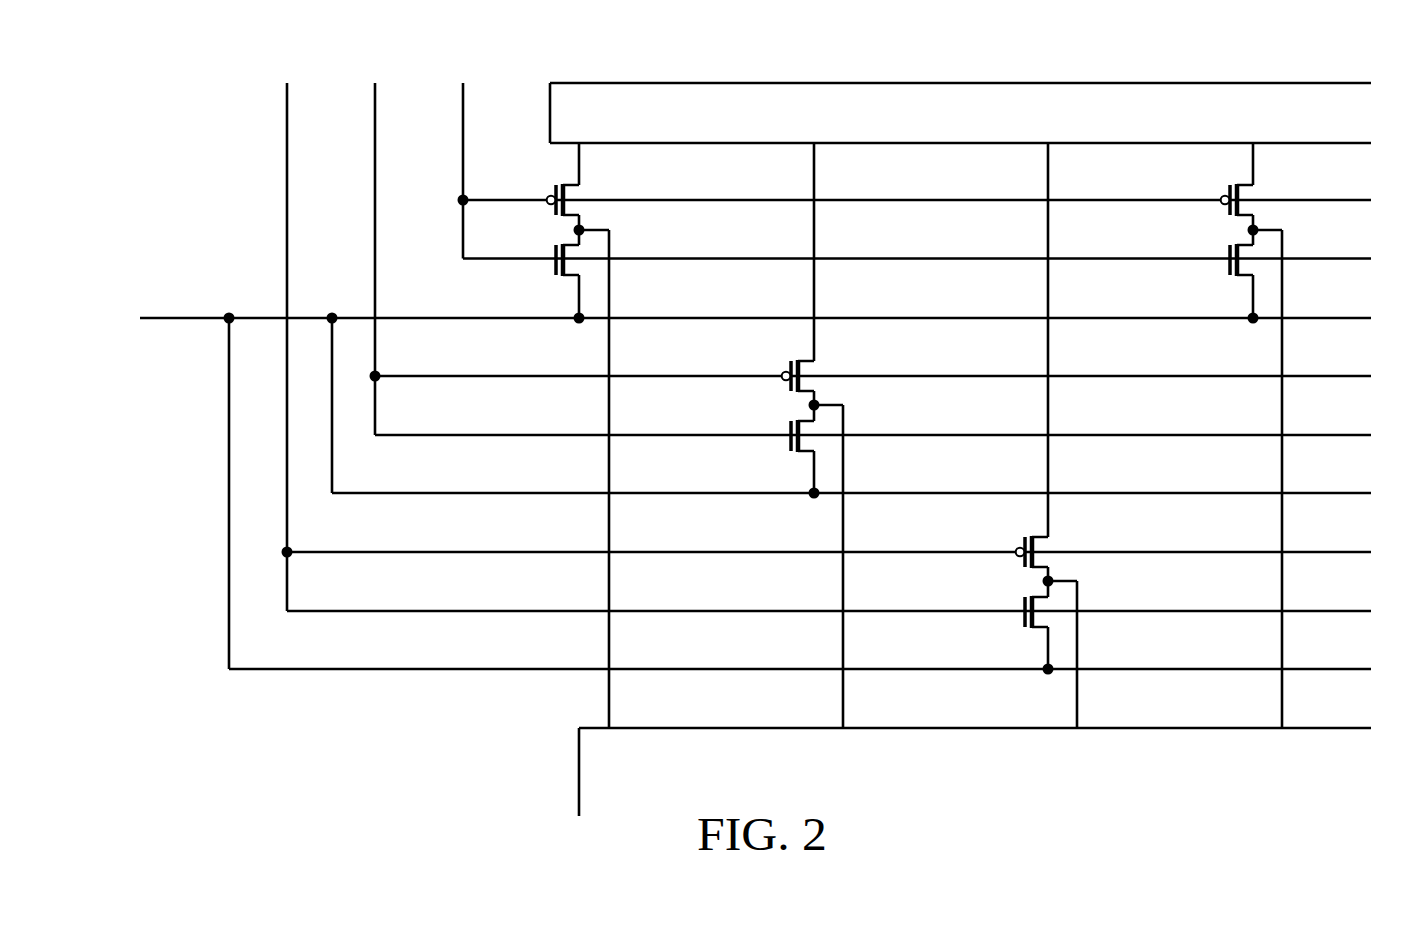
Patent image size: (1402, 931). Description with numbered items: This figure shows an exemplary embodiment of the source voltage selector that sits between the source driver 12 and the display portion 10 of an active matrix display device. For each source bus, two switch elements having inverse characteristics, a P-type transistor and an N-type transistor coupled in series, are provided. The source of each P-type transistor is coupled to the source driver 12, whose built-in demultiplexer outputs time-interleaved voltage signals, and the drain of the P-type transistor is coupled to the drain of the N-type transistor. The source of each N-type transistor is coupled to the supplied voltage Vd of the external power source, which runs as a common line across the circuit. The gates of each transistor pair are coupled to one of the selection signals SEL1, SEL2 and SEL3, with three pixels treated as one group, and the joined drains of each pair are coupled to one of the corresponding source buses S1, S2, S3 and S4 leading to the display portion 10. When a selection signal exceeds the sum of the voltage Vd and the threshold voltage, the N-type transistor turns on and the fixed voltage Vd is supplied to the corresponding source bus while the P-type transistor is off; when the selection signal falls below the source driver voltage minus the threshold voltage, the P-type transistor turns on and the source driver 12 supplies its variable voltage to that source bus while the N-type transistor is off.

The display portion 10 is at (579, 772).
The source driver 12 is at (958, 83).
The first selection signal SEL1 is at (460, 155).
The second selection signal SEL2 is at (372, 243).
The third selection signal SEL3 is at (285, 331).
The supplied voltage of the external power source Vd is at (734, 318).
The first source bus S1 is at (609, 697).
The second source bus S2 is at (843, 697).
The third source bus S3 is at (1077, 697).
The fourth source bus S4 is at (1282, 697).